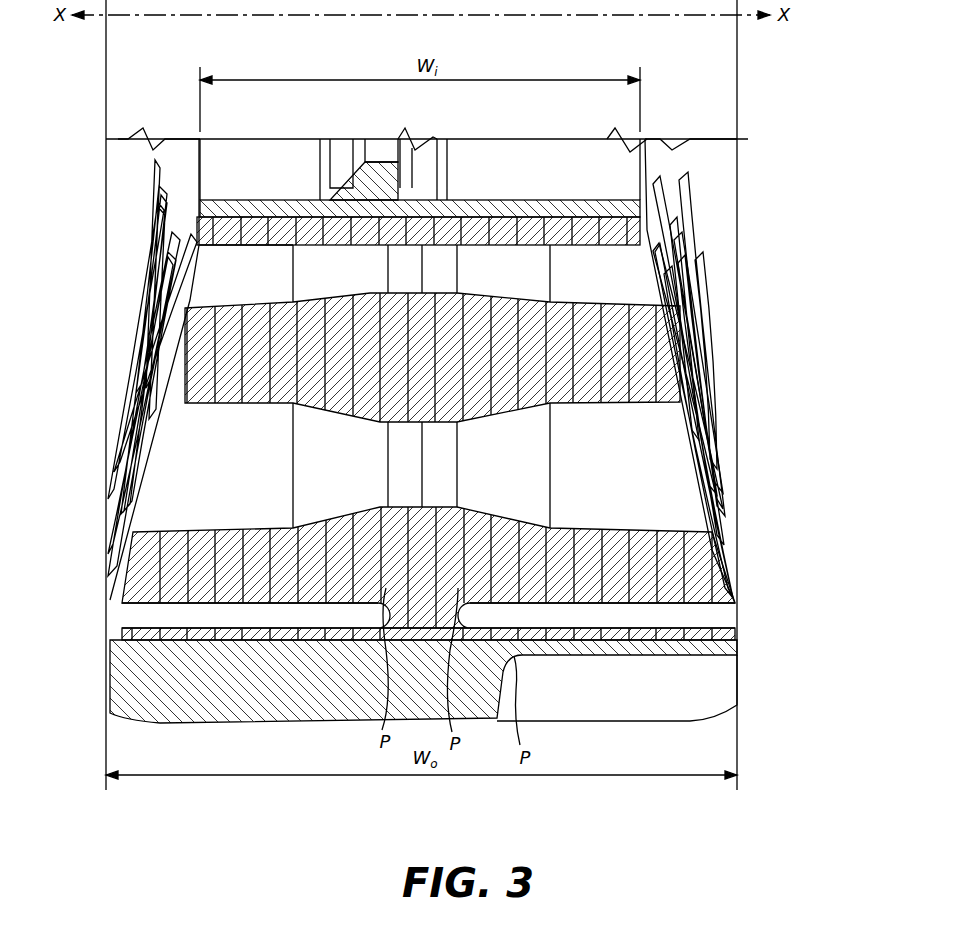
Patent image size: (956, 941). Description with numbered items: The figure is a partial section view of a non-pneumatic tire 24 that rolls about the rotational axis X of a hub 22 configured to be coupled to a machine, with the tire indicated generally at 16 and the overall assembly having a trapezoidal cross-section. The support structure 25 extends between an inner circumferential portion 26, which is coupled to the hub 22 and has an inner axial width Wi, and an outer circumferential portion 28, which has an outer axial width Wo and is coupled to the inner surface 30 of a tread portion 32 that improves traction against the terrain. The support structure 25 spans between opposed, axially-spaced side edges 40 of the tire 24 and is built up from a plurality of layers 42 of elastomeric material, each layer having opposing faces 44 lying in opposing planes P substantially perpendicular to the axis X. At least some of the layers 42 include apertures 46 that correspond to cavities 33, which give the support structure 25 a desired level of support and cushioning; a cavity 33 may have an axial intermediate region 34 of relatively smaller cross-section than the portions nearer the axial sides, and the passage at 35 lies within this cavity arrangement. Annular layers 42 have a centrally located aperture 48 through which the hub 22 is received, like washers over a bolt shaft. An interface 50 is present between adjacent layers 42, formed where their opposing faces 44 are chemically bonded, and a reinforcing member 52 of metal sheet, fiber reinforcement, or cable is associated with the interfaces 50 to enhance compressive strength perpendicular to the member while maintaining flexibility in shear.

The device 16 is at (760, 81).
The hub 22 is at (507, 205).
The tire 24 is at (748, 269).
The support structure 25 is at (705, 312).
The inner circumferential portion 26 is at (262, 238).
The outer circumferential portion 28 is at (160, 628).
The inner surface 30 is at (693, 628).
The tread portion 32 is at (693, 688).
The cavities 33 is at (215, 290).
The axial intermediate region 34 is at (487, 265).
The passage 35 is at (310, 262).
The side edges 40 is at (108, 667).
The layers 42 is at (358, 248).
The opposing faces 44 is at (330, 362).
The apertures 46 is at (370, 505).
The centrally located aperture 48 is at (560, 215).
The interface 50 is at (272, 530).
The reinforcing member 52 is at (280, 605).